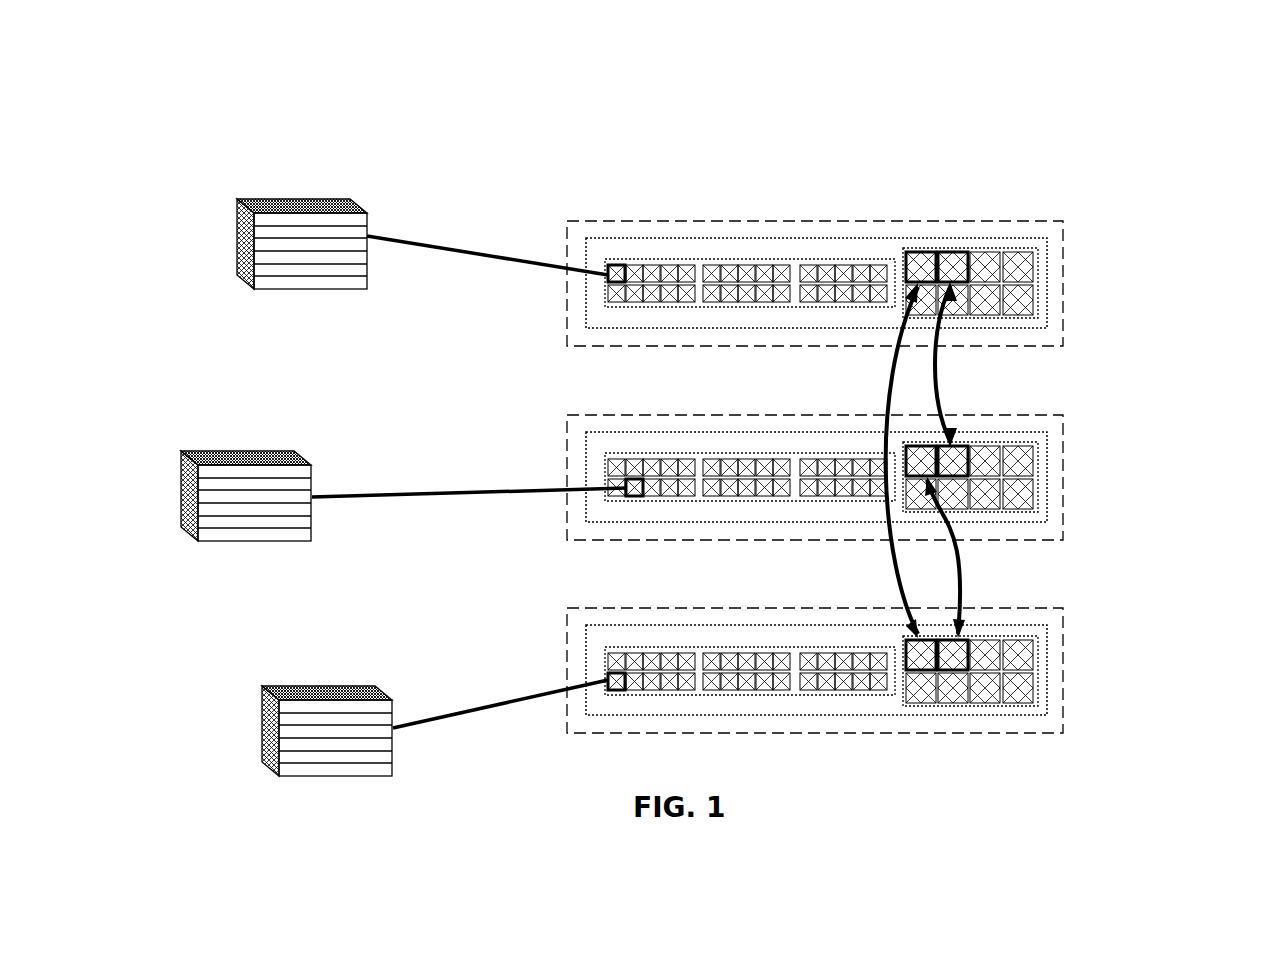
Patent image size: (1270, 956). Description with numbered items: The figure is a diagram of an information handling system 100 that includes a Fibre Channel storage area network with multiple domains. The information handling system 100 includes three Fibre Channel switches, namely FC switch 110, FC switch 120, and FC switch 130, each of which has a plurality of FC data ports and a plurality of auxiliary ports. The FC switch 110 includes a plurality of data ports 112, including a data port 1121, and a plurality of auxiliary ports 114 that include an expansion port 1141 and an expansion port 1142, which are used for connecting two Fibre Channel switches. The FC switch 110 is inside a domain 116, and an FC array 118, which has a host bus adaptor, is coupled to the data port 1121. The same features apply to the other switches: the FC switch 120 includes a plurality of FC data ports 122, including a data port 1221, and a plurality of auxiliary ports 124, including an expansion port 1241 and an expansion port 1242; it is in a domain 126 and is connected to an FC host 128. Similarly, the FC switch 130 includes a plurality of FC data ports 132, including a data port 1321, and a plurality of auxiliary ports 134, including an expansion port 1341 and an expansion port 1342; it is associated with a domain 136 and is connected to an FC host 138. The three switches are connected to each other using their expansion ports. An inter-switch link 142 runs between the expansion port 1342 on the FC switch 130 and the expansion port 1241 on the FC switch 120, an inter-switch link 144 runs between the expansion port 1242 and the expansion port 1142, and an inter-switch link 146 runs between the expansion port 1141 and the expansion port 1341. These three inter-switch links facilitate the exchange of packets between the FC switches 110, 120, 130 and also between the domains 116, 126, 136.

The information handling system 100 is at (1062, 106).
The FC switch 110 is at (1047, 260).
The data ports 112 is at (737, 258).
The data port 1121 is at (633, 265).
The auxiliary ports 114 is at (1038, 256).
The expansion port 1141 is at (915, 250).
The expansion port 1142 is at (952, 250).
The domain 116 is at (1063, 295).
The FC array 118 is at (358, 200).
The FC switch 120 is at (1047, 450).
The data ports 122 is at (605, 478).
The data port 1221 is at (634, 479).
The auxiliary ports 124 is at (1038, 495).
The expansion port 1241 is at (896, 446).
The expansion port 1242 is at (956, 446).
The domain 126 is at (1063, 480).
The FC host 128 is at (305, 453).
The FC switch 130 is at (1047, 648).
The data ports 132 is at (605, 672).
The data port 1321 is at (630, 673).
The auxiliary ports 134 is at (1038, 692).
The expansion port 1341 is at (896, 640).
The expansion port 1342 is at (969, 640).
The domain 136 is at (1063, 685).
The FC host 138 is at (345, 684).
The inter-switch link 142 is at (958, 555).
The inter-switch link 144 is at (940, 358).
The inter-switch link 146 is at (888, 390).